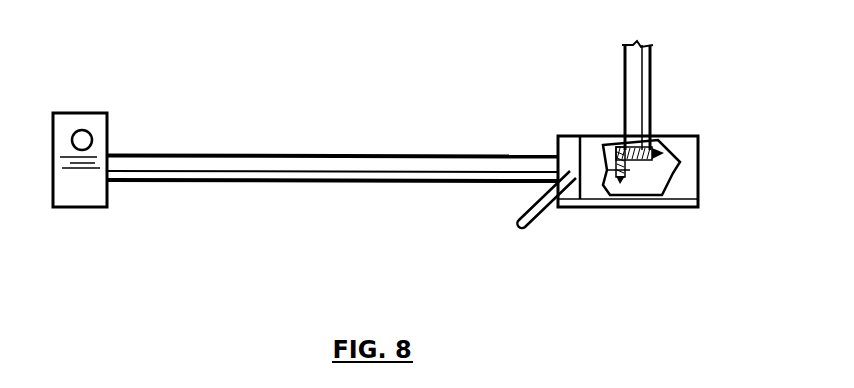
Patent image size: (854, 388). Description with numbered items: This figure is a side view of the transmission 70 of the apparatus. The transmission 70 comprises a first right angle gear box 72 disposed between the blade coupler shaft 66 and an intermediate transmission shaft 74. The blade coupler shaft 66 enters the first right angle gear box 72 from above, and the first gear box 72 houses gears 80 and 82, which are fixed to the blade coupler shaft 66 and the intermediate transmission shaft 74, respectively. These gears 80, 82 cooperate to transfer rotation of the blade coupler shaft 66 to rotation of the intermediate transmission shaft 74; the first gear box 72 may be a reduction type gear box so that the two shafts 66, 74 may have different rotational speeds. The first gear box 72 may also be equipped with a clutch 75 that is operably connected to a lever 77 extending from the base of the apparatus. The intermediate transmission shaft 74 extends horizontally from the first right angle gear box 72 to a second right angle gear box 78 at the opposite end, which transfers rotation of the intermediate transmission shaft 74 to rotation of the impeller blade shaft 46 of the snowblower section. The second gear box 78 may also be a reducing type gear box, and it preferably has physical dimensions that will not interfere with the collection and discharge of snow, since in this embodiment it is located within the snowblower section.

The transmission 70 is at (248, 128).
The second right angle gear box 78 is at (87, 205).
The impeller blade shaft 46 is at (83, 130).
The intermediate transmission shaft 74 is at (288, 183).
The first right angle gear box 72 is at (670, 208).
The clutch 75 is at (572, 208).
The blade coupler shaft 66 is at (653, 80).
The gear 82 is at (633, 208).
The gear 80 is at (677, 165).
The lever 77 is at (525, 227).